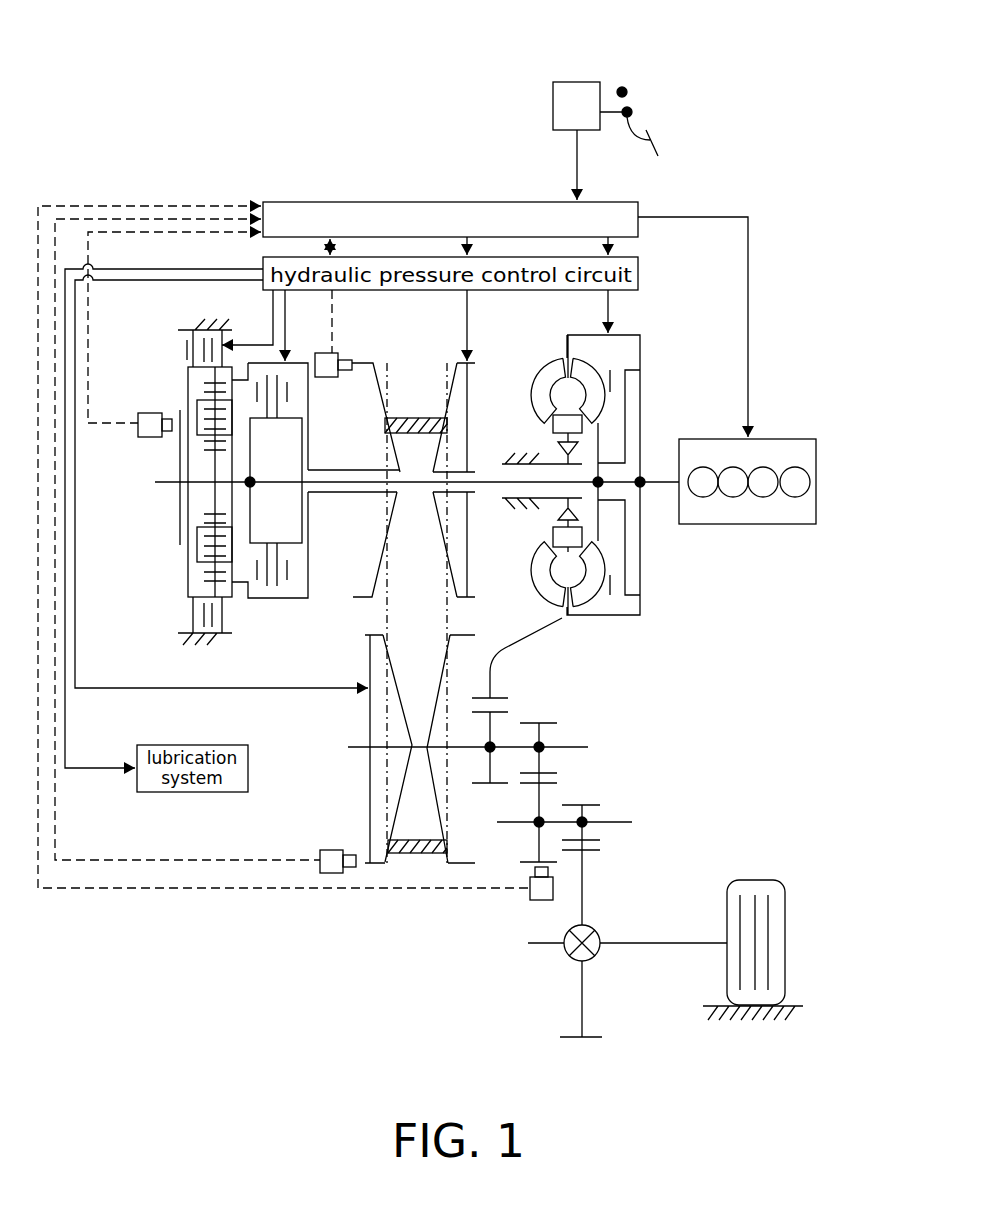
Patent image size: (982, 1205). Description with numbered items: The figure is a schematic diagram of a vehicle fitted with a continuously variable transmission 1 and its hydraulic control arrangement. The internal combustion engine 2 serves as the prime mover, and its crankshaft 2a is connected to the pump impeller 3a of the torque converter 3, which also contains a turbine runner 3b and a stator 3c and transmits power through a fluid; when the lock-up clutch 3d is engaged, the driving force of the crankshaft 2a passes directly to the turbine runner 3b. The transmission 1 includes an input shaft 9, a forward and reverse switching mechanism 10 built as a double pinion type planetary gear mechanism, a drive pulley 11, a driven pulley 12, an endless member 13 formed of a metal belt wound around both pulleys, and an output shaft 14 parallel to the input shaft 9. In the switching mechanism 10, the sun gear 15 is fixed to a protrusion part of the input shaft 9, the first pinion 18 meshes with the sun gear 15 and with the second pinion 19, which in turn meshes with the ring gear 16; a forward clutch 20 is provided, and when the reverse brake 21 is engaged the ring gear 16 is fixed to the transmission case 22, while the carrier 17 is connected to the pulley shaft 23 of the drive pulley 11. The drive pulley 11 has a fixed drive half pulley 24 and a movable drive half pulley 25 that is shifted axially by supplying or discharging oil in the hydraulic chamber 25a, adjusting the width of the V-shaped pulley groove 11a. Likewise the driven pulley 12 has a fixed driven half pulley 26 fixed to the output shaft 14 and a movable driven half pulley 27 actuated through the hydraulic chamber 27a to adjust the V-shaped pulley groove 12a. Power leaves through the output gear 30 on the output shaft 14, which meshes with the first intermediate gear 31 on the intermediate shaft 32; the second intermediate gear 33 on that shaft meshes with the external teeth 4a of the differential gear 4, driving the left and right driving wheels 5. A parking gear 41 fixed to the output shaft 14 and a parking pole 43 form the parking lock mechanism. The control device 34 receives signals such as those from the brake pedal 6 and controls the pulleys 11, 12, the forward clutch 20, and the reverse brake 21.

The continuously variable transmission 1 is at (211, 122).
The internal combustion engine 2 is at (816, 462).
The crankshaft 2a is at (663, 470).
The torque converter 3 is at (544, 346).
The pump impeller 3a is at (538, 375).
The turbine runner 3b is at (585, 606).
The stator 3c is at (552, 424).
The lock-up clutch 3d is at (642, 375).
The differential gear 4 is at (568, 958).
The external teeth 4a is at (597, 843).
The driving wheels 5 is at (787, 912).
The brake pedal 6 is at (620, 88).
The input shaft 9 is at (487, 485).
The forward and reverse switching mechanism 10 is at (163, 514).
The drive pulley 11 is at (294, 512).
The V-shaped pulley groove 11a is at (415, 385).
The driven pulley 12 is at (382, 804).
The V-shaped pulley groove 12a is at (407, 860).
The endless member 13 is at (423, 862).
The output shaft 14 is at (460, 745).
The sun gear 15 is at (200, 470).
The ring gear 16 is at (183, 349).
The carrier 17 is at (200, 567).
The first pinion 18 is at (200, 513).
The second pinion 19 is at (202, 383).
The forward clutch 20 is at (295, 569).
The reverse brake 21 is at (203, 377).
The transmission case 22 is at (522, 505).
The pulley shaft 23 is at (345, 468).
The fixed drive half pulley 24 is at (355, 362).
The movable drive half pulley 25 is at (452, 378).
The hydraulic chamber 25a is at (458, 412).
The fixed driven half pulley 26 is at (467, 862).
The movable driven half pulley 27 is at (367, 718).
The hydraulic chamber 27a is at (367, 778).
The output gear 30 is at (545, 720).
The first intermediate gear 31 is at (548, 775).
The intermediate shaft 32 is at (513, 825).
The second intermediate gear 33 is at (590, 803).
The control device 34 is at (452, 200).
The parking gear 41 is at (488, 785).
The parking pole 43 is at (512, 648).